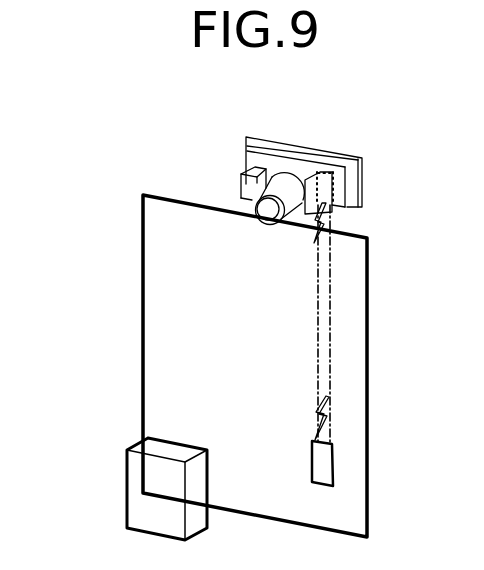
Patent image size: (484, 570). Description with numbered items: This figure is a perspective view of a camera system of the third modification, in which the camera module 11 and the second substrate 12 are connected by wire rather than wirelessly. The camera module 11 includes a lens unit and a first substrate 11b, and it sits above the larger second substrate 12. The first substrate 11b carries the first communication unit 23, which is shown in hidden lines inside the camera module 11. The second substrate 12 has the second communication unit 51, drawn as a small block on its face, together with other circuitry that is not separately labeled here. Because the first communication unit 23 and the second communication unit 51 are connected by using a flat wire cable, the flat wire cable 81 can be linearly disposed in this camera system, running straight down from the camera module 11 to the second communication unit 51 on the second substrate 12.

The camera module 11 is at (352, 154).
The first substrate 11b is at (352, 172).
The second substrate 12 is at (148, 286).
The first communication unit 23 is at (345, 195).
The second communication unit 51 is at (332, 460).
The flat wire cable 81 is at (331, 310).